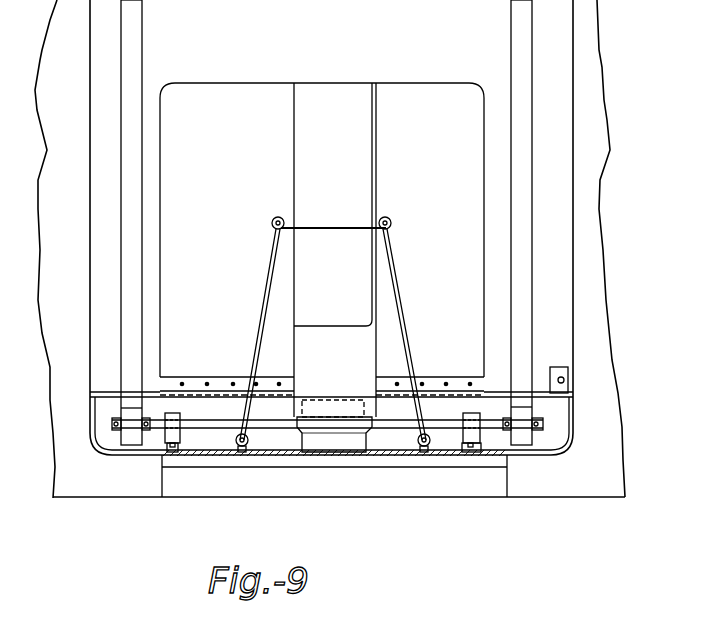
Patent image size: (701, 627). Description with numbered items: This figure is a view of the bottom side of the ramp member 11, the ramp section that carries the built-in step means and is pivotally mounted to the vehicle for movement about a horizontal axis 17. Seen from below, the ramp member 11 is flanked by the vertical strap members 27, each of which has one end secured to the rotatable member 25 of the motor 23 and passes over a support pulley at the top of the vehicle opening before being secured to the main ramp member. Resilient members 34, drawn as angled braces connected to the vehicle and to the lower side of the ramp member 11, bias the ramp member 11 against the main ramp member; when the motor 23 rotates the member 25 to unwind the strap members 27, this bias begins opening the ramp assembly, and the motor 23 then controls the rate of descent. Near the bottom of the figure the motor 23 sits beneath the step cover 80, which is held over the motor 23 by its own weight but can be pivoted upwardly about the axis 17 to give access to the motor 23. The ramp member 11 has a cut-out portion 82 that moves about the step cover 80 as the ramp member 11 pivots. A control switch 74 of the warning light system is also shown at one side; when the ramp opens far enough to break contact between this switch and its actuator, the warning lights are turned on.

The ramp member 11 is at (421, 163).
The horizontal axis 17 is at (167, 392).
The motor 23 is at (340, 444).
The rotatable member 25 is at (205, 418).
The strap member 27 is at (128, 265).
The resilient member 34 is at (267, 285).
The control switch 74 is at (561, 380).
The step cover 80 is at (337, 407).
The cut-out portion 82 is at (324, 327).